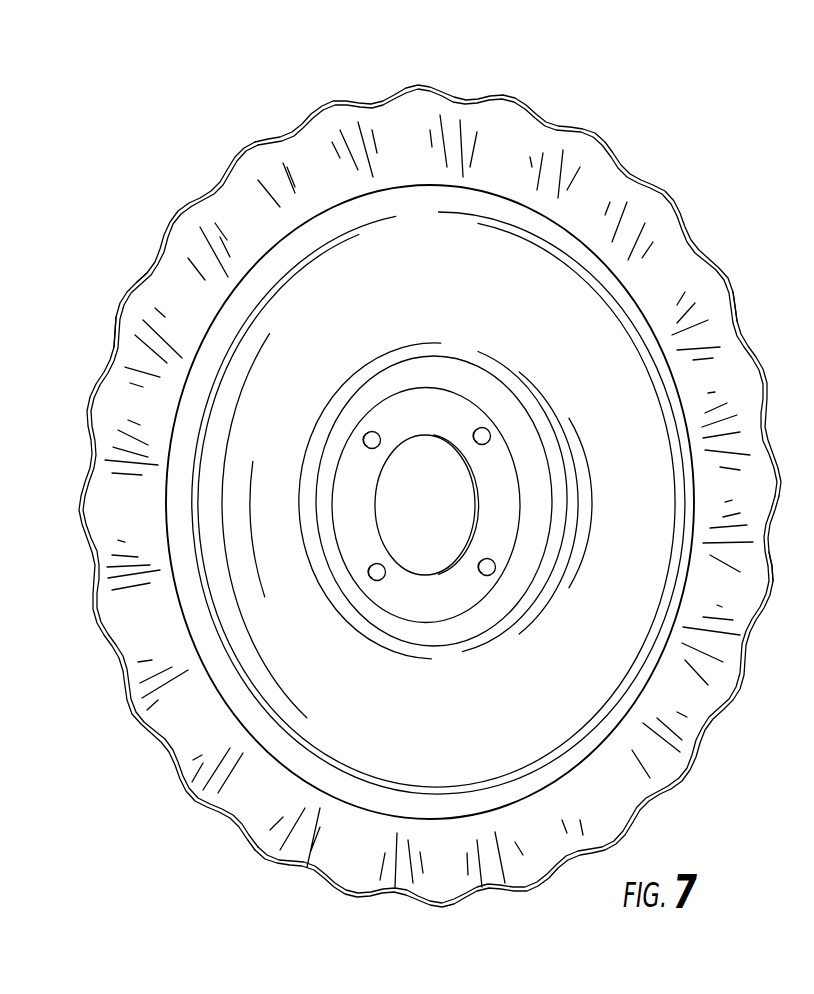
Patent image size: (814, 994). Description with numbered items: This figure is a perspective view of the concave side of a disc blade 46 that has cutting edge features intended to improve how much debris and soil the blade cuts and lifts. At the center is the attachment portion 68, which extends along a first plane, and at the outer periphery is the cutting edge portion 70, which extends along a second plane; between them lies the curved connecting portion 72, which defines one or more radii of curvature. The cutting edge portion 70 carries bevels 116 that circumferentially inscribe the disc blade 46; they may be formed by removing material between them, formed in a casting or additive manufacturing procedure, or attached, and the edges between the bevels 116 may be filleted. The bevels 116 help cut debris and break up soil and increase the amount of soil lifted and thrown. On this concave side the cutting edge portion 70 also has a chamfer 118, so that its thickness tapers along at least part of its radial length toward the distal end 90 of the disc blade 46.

The disc blade 46 is at (201, 137).
The attachment portion 68 is at (446, 429).
The cutting edge portion 70 is at (207, 248).
The curved connecting portion 72 is at (466, 298).
The distal end 90 is at (141, 270).
The bevels 116 is at (147, 700).
The chamfer 118 is at (120, 330).